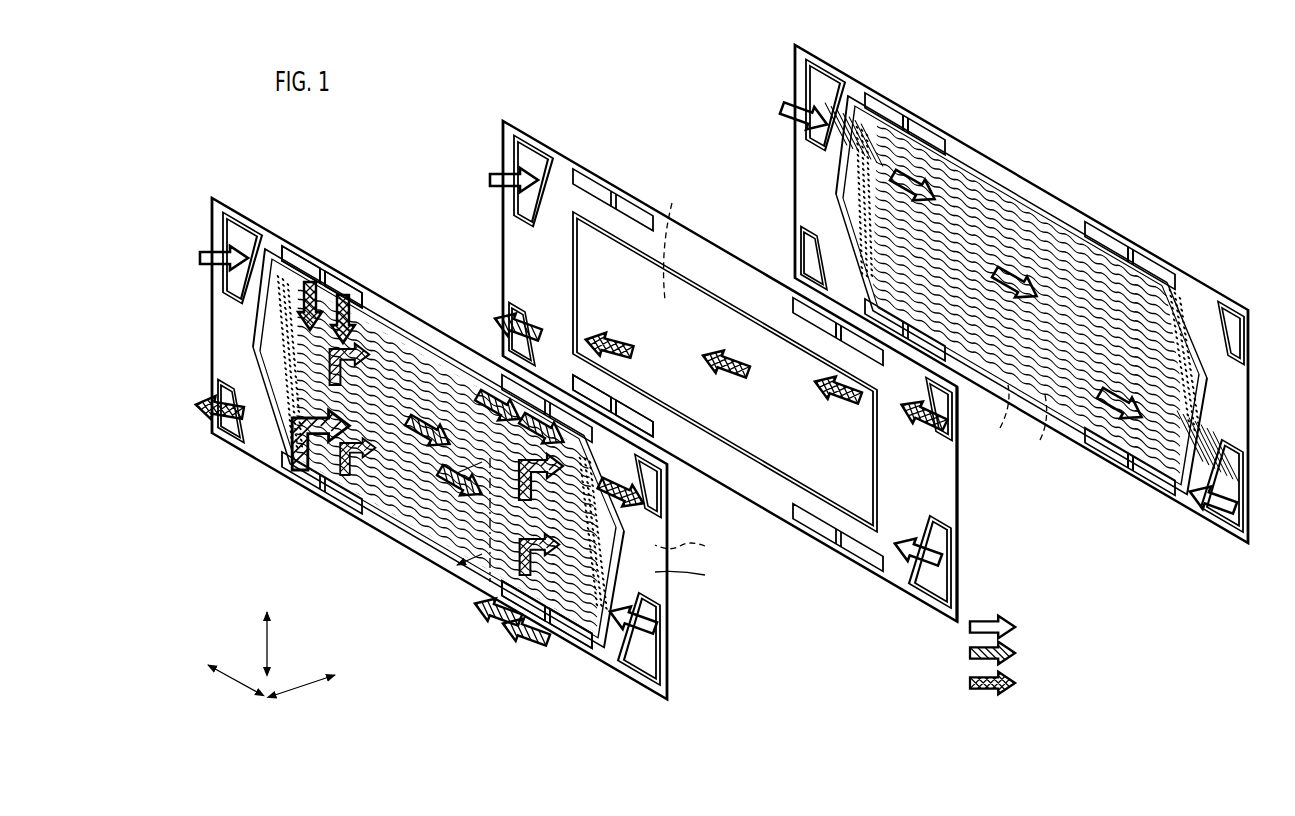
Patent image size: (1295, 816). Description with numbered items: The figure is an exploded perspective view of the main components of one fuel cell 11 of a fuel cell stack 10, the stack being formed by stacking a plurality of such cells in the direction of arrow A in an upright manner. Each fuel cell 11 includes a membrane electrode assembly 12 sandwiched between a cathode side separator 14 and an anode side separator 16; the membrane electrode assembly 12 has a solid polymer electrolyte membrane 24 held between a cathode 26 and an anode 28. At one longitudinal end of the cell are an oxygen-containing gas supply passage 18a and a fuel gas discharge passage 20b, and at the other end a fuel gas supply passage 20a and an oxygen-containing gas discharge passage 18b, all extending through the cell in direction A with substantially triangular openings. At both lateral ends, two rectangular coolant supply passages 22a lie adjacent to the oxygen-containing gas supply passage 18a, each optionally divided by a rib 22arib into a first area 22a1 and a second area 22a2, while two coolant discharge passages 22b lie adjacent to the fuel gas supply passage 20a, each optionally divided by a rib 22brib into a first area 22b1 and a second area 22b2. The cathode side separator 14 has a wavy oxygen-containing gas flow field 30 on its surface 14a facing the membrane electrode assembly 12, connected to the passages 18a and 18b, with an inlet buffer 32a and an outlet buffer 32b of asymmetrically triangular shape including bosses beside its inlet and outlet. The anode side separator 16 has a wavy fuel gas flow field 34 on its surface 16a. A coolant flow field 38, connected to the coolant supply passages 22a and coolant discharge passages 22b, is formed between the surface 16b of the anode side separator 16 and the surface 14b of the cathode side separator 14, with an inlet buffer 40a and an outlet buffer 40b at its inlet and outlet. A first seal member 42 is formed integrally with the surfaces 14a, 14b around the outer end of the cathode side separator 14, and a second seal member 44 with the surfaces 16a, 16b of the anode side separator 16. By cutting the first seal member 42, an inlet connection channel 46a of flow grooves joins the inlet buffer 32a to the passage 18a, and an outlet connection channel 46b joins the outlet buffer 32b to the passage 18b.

The fuel cell stack 10 is at (394, 141).
The fuel cell 11 is at (361, 141).
The membrane electrode assembly 12 is at (513, 124).
The cathode side separator 14 is at (793, 60).
The surface of cathode side separator 14a is at (1032, 425).
The surface of cathode side separator 14b is at (997, 412).
The anode side separator 16 is at (213, 197).
The surface of anode side separator 16a is at (696, 543).
The surface of anode side separator 16b is at (696, 572).
The oxygen-containing gas supply passage 18a is at (248, 242).
The oxygen-containing gas discharge passage 18b is at (645, 655).
The fuel gas supply passage 20a is at (657, 492).
The fuel gas discharge passage 20b is at (230, 405).
The coolant supply passage 22a is at (398, 212).
The first area 22a1 is at (316, 278).
The second area 22a2 is at (342, 288).
The rib 22arib is at (900, 150).
The coolant discharge passage 22b is at (446, 625).
The first area 22b1 is at (542, 636).
The second area 22b2 is at (520, 612).
The rib 22brib is at (1100, 242).
The solid polymer electrolyte membrane 24 is at (957, 492).
The cathode 26 is at (677, 239).
The anode 28 is at (583, 276).
The oxygen-containing gas flow field 30 is at (985, 195).
The inlet buffer 32a is at (862, 190).
The outlet buffer 32b is at (1185, 318).
The fuel gas flow field 34 is at (452, 385).
The coolant flow field 38 is at (402, 482).
The inlet buffer 40a is at (273, 332).
The outlet buffer 40b is at (600, 578).
The first seal member 42 is at (1075, 200).
The second seal member 44 is at (432, 352).
The inlet connection channel 46a is at (830, 150).
The outlet connection channel 46b is at (1208, 425).